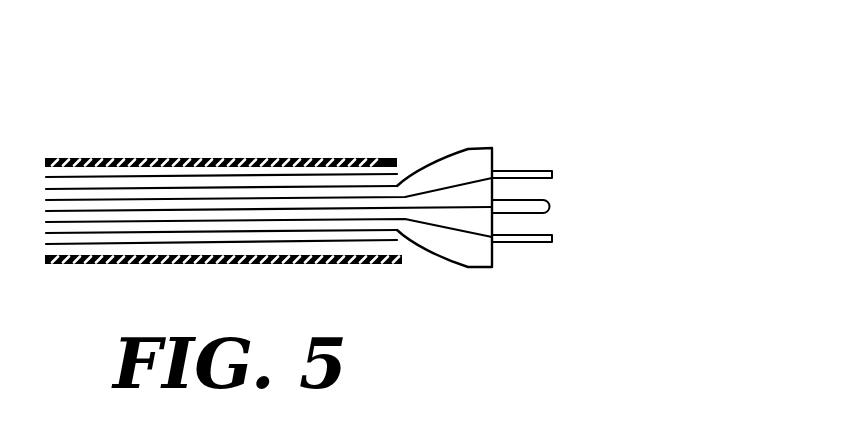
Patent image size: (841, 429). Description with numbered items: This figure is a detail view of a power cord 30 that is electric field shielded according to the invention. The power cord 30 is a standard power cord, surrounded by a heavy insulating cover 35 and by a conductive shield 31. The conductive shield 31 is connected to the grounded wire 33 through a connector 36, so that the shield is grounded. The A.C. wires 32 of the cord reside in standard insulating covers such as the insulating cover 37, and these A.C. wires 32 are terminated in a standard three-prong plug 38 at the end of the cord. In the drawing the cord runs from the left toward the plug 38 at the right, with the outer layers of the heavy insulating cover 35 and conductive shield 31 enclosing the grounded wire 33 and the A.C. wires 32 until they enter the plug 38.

The power cord 30 is at (168, 286).
The conductive shield 31 is at (274, 168).
The A.C. wires 32 is at (555, 177).
The grounded wire 33 is at (550, 212).
The heavy insulating cover 35 is at (386, 157).
The connector 36 is at (367, 208).
The insulating covers 37 is at (178, 189).
The 3-prong plug 38 is at (492, 148).